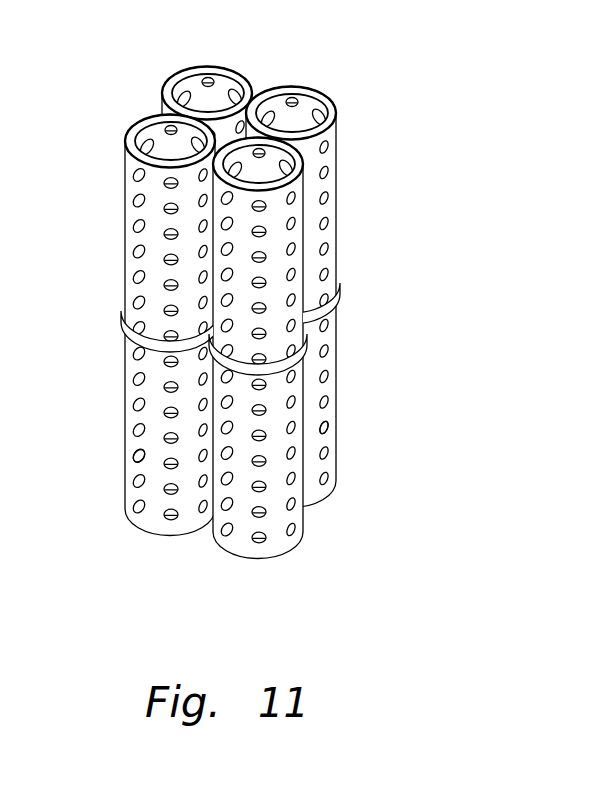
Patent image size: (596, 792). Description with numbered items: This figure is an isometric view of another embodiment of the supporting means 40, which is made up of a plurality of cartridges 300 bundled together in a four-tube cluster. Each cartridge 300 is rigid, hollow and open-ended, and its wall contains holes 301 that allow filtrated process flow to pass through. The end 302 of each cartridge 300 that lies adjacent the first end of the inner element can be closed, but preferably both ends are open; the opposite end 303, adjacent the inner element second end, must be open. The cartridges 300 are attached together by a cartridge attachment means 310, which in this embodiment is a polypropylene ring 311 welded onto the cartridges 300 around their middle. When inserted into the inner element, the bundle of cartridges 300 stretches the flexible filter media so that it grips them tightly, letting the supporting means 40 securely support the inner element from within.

The supporting means 40 is at (207, 323).
The cartridge 300 is at (338, 172).
The hole 301 is at (328, 430).
The cartridge end 302 is at (141, 119).
The cartridge end 303 is at (258, 557).
The cartridge attachment means 310 is at (207, 341).
The polypropylene ring 311 is at (343, 296).